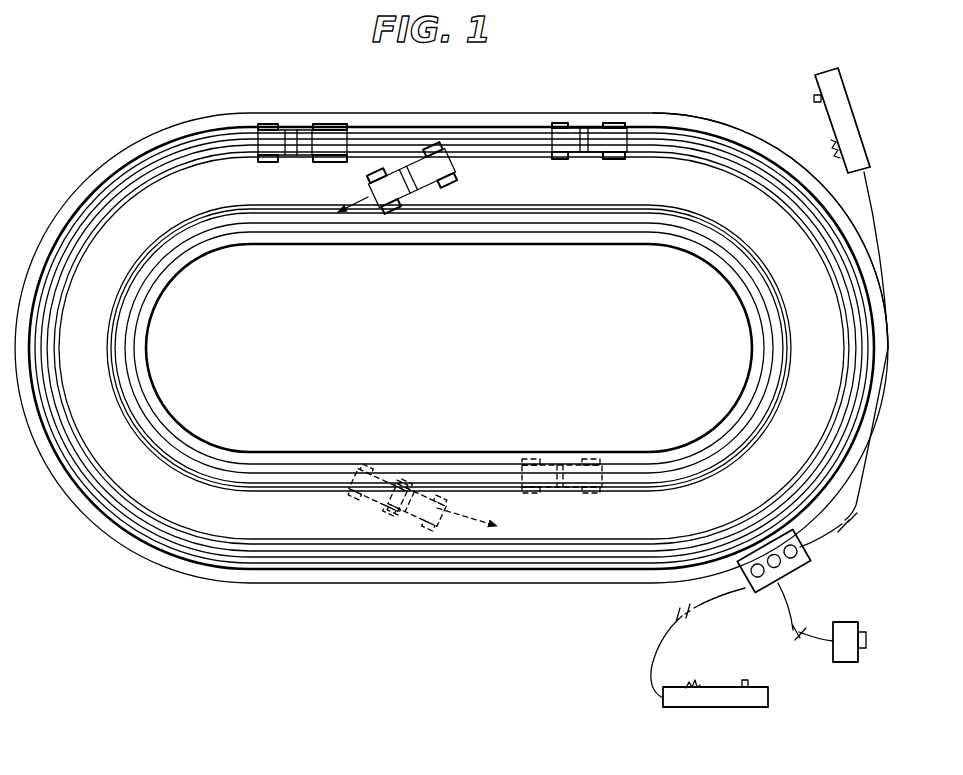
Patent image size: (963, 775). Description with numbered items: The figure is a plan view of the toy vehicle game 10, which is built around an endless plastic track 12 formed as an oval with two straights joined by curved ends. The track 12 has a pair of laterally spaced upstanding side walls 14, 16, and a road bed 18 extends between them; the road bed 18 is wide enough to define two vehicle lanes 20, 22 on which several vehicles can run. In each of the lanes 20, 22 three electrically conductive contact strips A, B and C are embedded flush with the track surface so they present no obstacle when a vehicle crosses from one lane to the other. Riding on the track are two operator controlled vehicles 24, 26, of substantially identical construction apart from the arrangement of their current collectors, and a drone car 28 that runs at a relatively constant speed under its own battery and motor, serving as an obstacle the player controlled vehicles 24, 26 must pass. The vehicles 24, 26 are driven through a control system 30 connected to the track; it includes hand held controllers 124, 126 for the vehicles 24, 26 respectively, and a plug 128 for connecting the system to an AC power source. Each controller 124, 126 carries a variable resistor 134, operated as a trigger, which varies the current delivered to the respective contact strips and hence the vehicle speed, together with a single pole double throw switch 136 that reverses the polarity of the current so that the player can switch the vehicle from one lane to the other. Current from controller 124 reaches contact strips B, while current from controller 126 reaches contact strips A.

The toy vehicle game 10 is at (652, 92).
The endless plastic track 12 is at (500, 112).
The side wall 14 is at (715, 125).
The side wall 16 is at (388, 242).
The road bed 18 is at (185, 195).
The vehicle lane 20 is at (200, 465).
The vehicle lane 22 is at (128, 518).
The operator controlled vehicle 24 is at (606, 152).
The operator controlled vehicle 26 is at (447, 166).
The drone car 28 is at (340, 136).
The control system 30 is at (795, 662).
The controller 124 is at (693, 702).
The controller 126 is at (878, 35).
The plug 128 is at (843, 624).
The variable resistor 134 is at (692, 684).
The single pole double throw switch 136 is at (757, 665).
The contact strip A is at (650, 206).
The contact strip B is at (611, 215).
The contact strip C is at (556, 224).